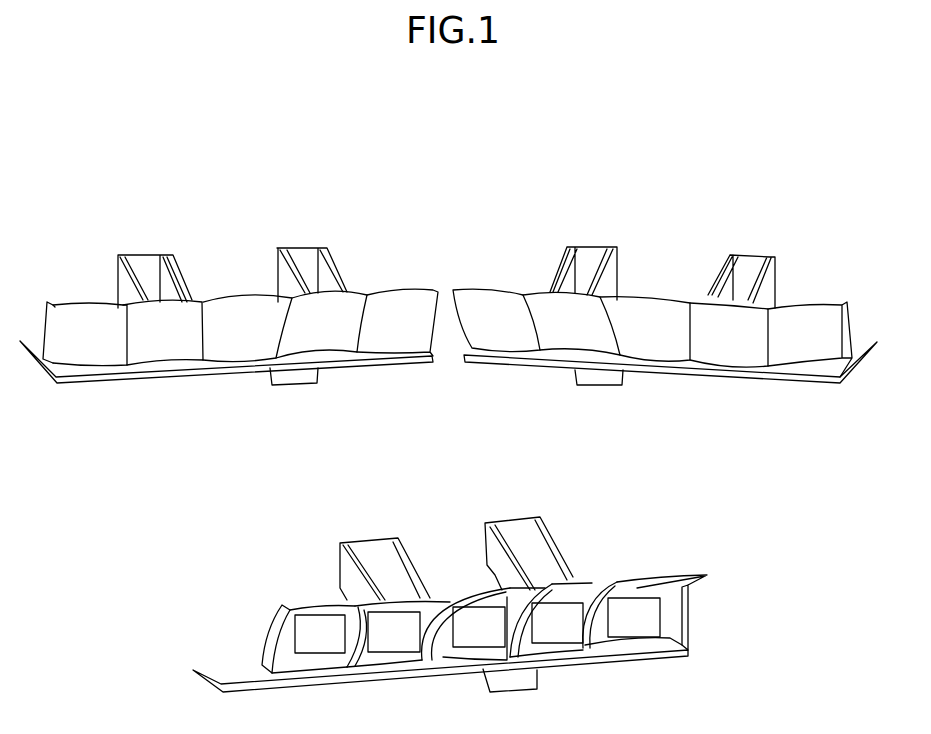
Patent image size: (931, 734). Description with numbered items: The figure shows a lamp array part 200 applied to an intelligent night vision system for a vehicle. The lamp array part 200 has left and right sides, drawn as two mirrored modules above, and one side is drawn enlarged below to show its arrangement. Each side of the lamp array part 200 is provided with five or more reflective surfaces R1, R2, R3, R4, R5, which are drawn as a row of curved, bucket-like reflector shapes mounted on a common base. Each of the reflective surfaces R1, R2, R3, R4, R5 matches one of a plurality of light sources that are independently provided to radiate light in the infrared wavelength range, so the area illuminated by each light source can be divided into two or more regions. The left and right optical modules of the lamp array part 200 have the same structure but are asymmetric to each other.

The lamp array part 200 is at (392, 203).
The reflective surface R1 is at (646, 612).
The reflective surface R2 is at (563, 619).
The reflective surface R3 is at (497, 622).
The reflective surface R4 is at (428, 627).
The reflective surface R5 is at (314, 639).